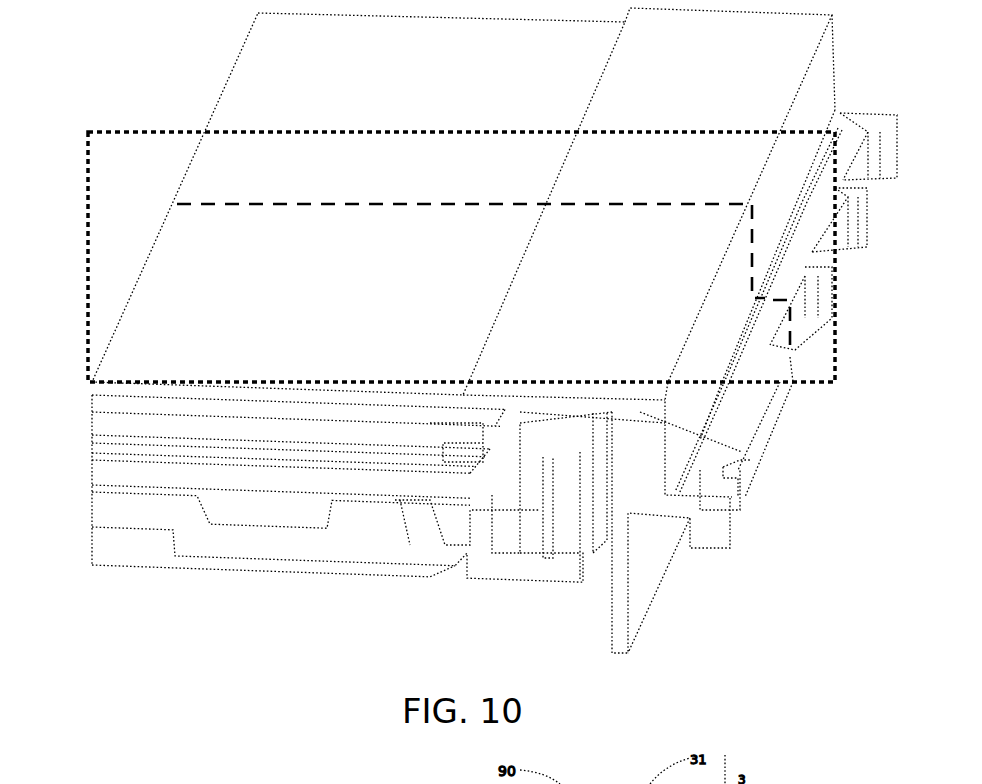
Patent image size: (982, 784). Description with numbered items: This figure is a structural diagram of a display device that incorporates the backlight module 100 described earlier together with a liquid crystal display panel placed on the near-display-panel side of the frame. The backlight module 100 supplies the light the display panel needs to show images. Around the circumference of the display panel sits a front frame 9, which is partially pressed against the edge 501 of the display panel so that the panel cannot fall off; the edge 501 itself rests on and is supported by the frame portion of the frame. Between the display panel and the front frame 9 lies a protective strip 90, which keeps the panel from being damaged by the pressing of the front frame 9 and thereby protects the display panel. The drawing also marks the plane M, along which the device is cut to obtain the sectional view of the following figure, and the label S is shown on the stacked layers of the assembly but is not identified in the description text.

The plane M is at (835, 108).
The substrate S is at (95, 405).
The backlight module 100 is at (76, 422).
The front frame 9 is at (742, 452).
The edge of the display panel 501 is at (515, 418).
The protective strip 90 is at (630, 555).